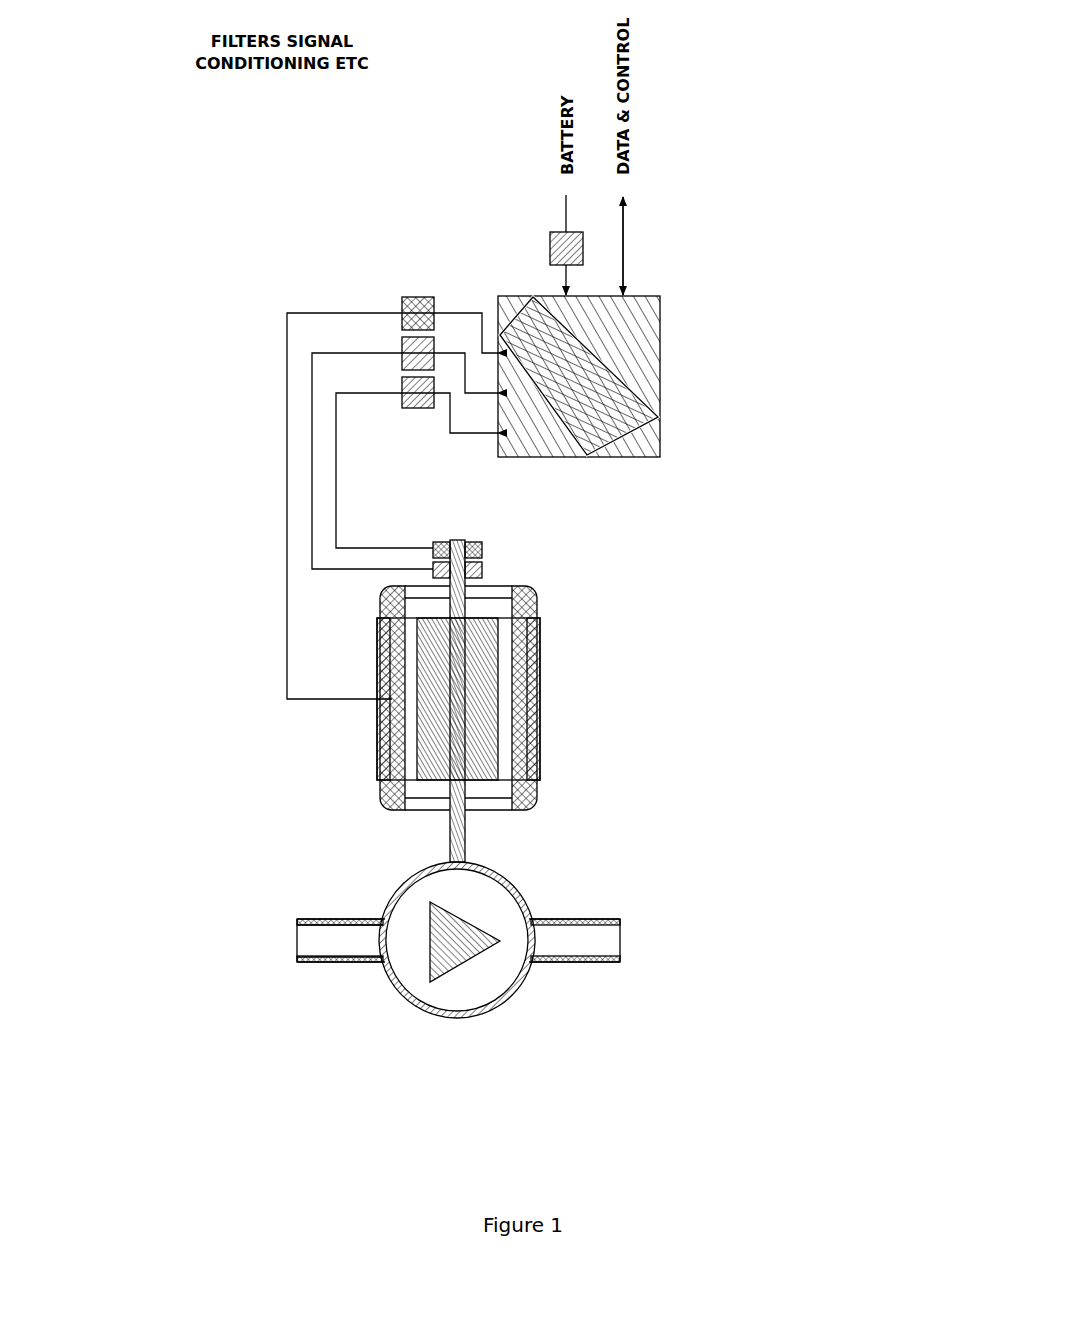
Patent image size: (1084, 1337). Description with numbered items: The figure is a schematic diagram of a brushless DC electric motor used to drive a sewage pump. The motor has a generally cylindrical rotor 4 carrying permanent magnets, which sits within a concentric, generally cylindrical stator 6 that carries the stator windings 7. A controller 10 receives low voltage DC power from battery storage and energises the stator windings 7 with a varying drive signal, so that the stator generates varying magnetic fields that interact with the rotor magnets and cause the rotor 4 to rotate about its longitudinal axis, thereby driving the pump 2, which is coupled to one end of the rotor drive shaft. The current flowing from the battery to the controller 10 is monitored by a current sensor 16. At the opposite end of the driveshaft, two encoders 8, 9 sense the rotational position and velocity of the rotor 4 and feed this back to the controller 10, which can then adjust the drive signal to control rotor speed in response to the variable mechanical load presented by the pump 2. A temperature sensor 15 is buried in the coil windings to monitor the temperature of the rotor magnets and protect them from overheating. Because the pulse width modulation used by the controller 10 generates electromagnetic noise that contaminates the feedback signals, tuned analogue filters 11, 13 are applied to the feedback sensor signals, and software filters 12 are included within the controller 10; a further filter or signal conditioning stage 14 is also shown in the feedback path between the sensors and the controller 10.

The load 2 is at (525, 987).
The rotor 4 is at (480, 760).
The stator 6 is at (543, 712).
The stator windings 7 is at (522, 678).
The encoder 8 is at (485, 569).
The encoder 9 is at (485, 546).
The controller 10 is at (667, 318).
The tuned analogue filter 11 is at (393, 368).
The software filters 12 is at (592, 377).
The tuned analogue filter 13 is at (395, 327).
The filter / signal conditioning 14 is at (397, 287).
The temperature sensor 15 is at (413, 693).
The current sensor 16 is at (585, 243).